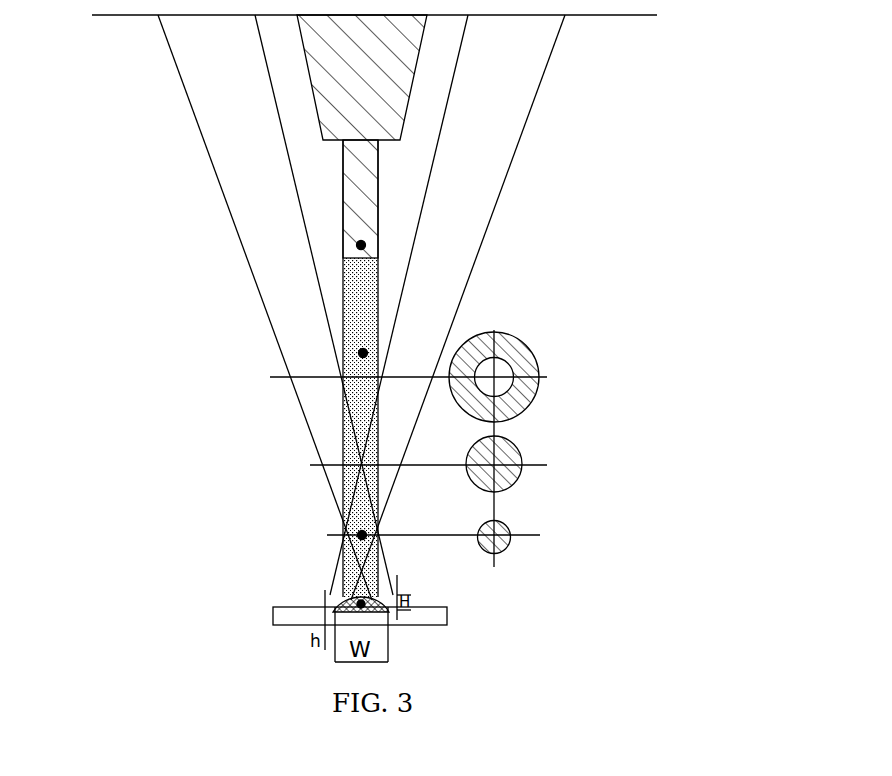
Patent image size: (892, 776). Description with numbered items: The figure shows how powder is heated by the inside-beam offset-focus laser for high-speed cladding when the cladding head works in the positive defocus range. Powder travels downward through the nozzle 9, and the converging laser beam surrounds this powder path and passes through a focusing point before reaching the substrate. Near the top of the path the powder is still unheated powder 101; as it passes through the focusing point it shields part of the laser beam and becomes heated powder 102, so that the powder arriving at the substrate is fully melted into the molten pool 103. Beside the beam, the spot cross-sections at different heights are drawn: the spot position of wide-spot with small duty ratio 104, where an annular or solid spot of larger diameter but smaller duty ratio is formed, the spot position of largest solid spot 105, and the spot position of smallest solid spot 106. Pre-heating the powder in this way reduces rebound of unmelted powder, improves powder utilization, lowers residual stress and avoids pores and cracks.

The nozzle 9 is at (361, 245).
The unheated powder 101 is at (363, 353).
The heated powder 102 is at (362, 535).
The molten pool 103 is at (348, 598).
The spot position of wide-spot with small duty ratio 104 is at (648, 363).
The spot position of largest solid spot 105 is at (648, 448).
The spot position of smallest solid spot 106 is at (648, 523).